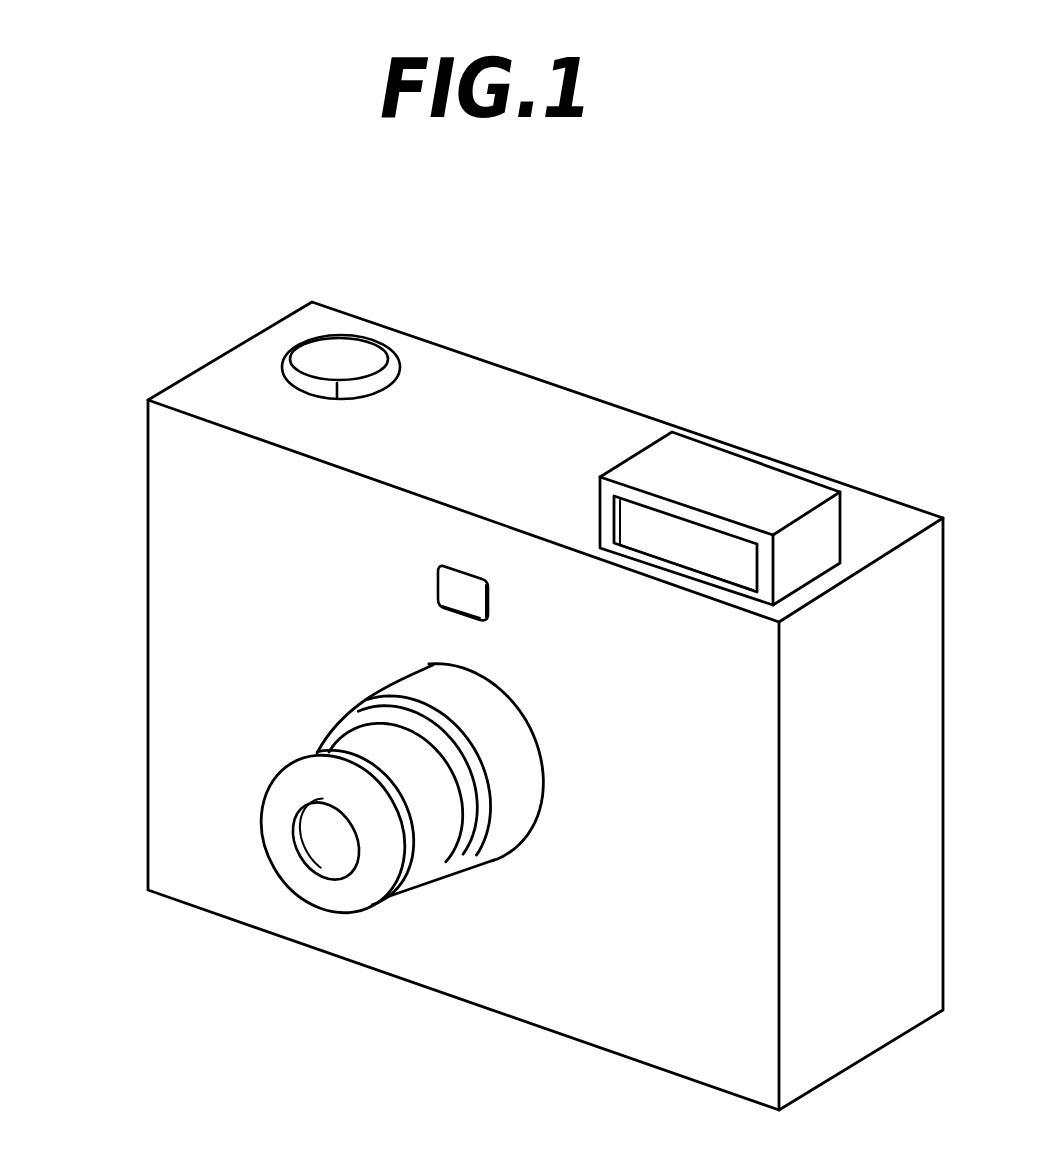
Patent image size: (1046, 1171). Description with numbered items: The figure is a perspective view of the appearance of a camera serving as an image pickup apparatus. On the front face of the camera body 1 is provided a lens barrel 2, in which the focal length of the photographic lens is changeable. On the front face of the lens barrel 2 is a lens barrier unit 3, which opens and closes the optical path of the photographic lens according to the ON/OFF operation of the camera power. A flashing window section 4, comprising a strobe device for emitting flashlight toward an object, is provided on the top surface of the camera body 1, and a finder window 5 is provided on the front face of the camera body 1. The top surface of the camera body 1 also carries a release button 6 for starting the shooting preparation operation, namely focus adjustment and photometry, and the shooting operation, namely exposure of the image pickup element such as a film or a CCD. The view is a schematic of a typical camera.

The camera body 1 is at (150, 663).
The lens barrel 2 is at (427, 838).
The lens barrier unit 3 is at (327, 848).
The flashing window section 4 is at (713, 545).
The finder window 5 is at (460, 580).
The release button 6 is at (319, 357).